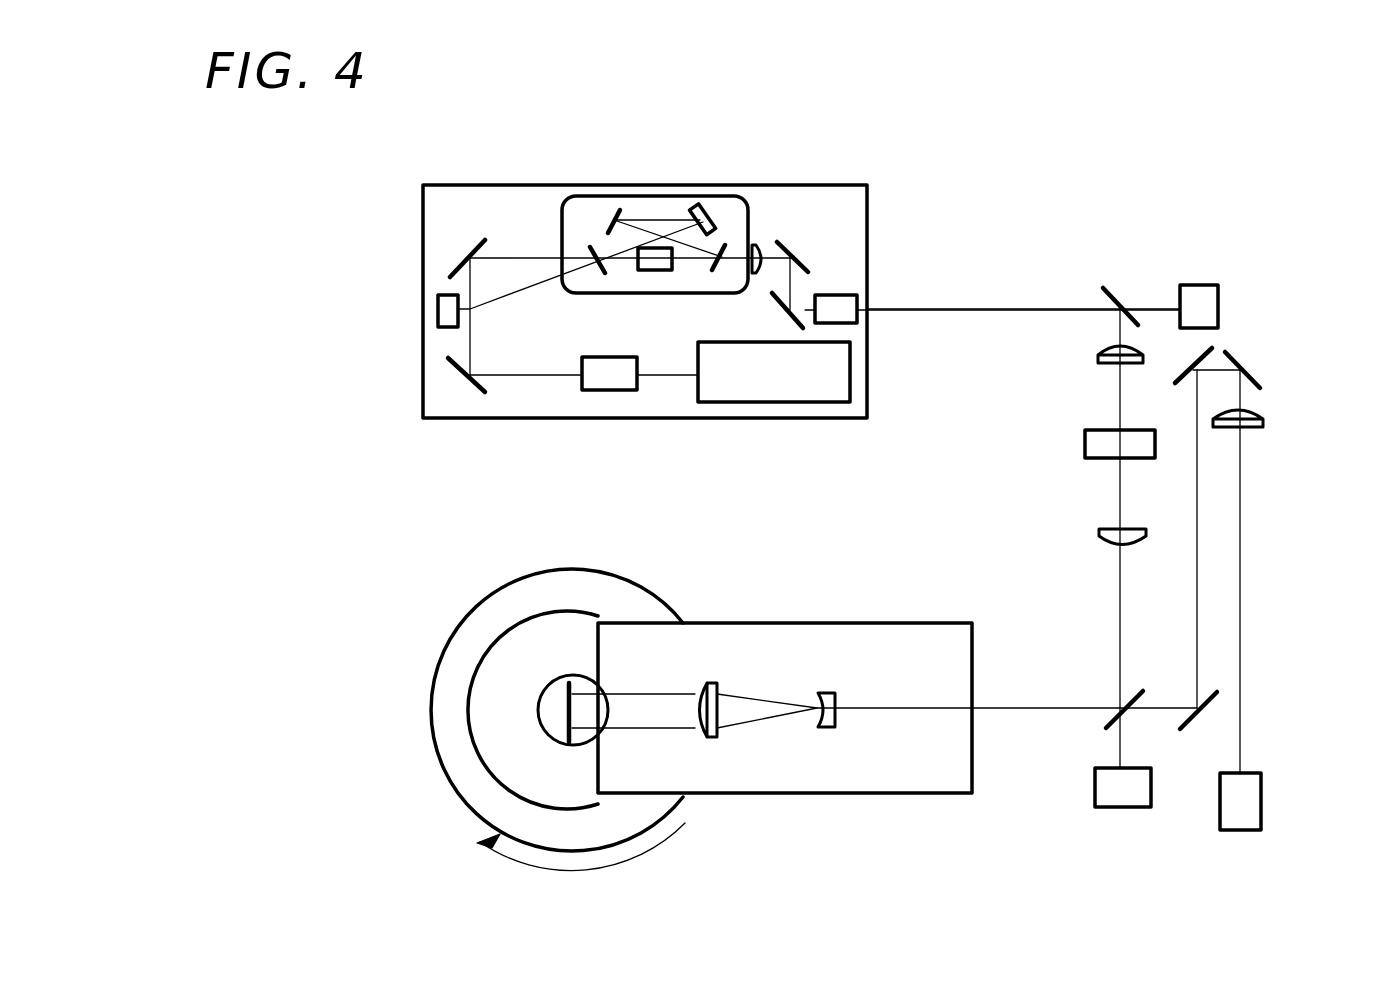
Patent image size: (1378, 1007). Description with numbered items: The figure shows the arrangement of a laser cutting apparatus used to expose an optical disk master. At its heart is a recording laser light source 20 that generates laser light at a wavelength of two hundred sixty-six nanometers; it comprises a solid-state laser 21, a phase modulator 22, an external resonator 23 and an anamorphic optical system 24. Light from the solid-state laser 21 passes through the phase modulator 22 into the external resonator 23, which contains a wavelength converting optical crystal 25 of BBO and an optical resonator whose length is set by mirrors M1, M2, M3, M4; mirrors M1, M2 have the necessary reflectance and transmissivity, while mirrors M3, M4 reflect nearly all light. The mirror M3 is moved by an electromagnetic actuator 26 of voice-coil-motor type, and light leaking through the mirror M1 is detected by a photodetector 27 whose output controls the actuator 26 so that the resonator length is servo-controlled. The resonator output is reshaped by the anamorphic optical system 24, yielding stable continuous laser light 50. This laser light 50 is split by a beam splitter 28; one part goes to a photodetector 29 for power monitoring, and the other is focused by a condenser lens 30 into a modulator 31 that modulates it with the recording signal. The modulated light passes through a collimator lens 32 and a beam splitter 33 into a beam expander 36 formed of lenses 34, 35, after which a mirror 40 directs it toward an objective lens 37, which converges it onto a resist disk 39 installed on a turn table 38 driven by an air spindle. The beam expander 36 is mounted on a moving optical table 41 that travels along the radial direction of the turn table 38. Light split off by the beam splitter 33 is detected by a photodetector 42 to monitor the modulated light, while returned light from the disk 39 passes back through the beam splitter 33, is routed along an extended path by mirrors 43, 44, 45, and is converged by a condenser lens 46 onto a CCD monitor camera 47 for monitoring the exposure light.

The recording laser light source 20 is at (867, 210).
The solid-state laser 21 is at (787, 402).
The phase modulator 22 is at (607, 390).
The external resonator 23 is at (653, 196).
The anamorphic optical system 24 is at (840, 295).
The wavelength converting optical crystal 25 is at (648, 272).
The electromagnetic actuator 26 is at (712, 216).
The photodetector 27 is at (438, 309).
The beam splitter 28 is at (1113, 303).
The photodetector 29 is at (1205, 285).
The condenser lens 30 is at (1097, 360).
The modulator 31 is at (1085, 445).
The collimator lens 32 is at (1102, 546).
The beam splitter 33 is at (1136, 692).
The lens 34 is at (828, 692).
The lens 35 is at (708, 683).
The beam expander 36 is at (772, 683).
The objective lens 37 is at (545, 727).
The turn table 38 is at (640, 588).
The resist disk 39 is at (473, 692).
The mirror 40 is at (563, 702).
The moving optical table 41 is at (820, 793).
The photodetector 42 is at (1130, 807).
The mirror 43 is at (1197, 715).
The mirror 44 is at (1188, 368).
The mirror 45 is at (1252, 362).
The condenser lens 46 is at (1263, 418).
The monitor camera 47 is at (1243, 830).
The laser light 50 is at (1017, 309).
The mirror M1 is at (595, 270).
The mirror M2 is at (713, 272).
The mirror M3 is at (692, 207).
The mirror M4 is at (618, 217).